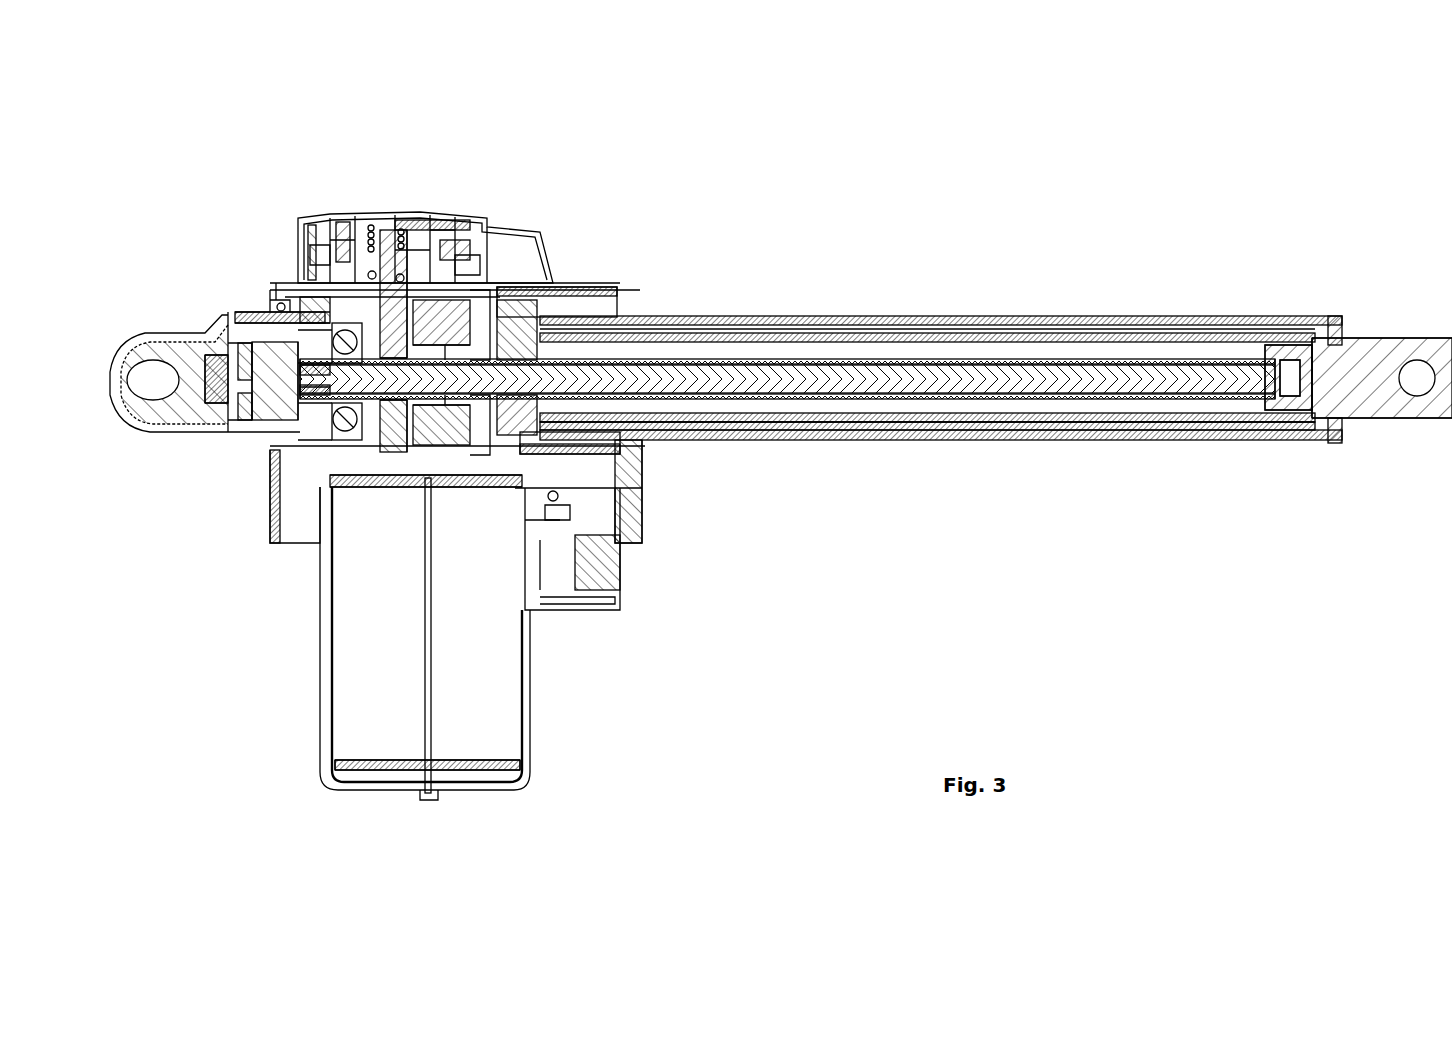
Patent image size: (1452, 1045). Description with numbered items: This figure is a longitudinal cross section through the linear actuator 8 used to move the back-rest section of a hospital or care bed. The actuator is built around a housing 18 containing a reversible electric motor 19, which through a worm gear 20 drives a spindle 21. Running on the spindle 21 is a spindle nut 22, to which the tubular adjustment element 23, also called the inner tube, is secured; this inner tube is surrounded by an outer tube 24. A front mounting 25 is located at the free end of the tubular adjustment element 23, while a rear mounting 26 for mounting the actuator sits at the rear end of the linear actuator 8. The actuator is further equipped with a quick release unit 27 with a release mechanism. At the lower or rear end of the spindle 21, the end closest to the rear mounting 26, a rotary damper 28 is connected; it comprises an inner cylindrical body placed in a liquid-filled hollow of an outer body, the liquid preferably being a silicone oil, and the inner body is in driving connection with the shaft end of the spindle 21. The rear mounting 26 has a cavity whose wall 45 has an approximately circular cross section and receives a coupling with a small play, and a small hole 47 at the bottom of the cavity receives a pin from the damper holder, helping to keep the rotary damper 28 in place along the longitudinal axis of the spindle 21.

The linear actuator 8 is at (786, 142).
The housing 18 is at (325, 640).
The reversible electric motor 19 is at (487, 658).
The worm gear 20 is at (413, 317).
The spindle 21 is at (915, 393).
The spindle nut 22 is at (622, 345).
The tubular adjustment element 23 is at (840, 425).
The outer tube 24 is at (838, 319).
The front mounting 25 is at (1350, 360).
The rear mounting 26 is at (163, 425).
The quick release unit 27 is at (385, 281).
The rotary damper 28 is at (270, 398).
The wall 45 is at (247, 347).
The hole 47 is at (205, 408).